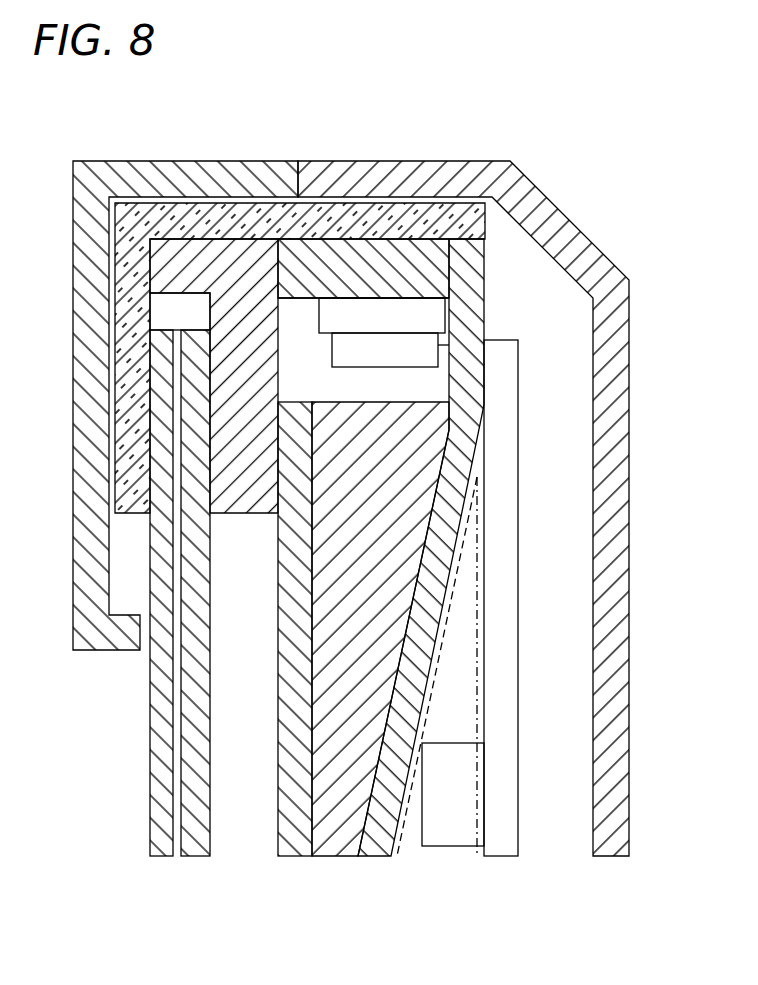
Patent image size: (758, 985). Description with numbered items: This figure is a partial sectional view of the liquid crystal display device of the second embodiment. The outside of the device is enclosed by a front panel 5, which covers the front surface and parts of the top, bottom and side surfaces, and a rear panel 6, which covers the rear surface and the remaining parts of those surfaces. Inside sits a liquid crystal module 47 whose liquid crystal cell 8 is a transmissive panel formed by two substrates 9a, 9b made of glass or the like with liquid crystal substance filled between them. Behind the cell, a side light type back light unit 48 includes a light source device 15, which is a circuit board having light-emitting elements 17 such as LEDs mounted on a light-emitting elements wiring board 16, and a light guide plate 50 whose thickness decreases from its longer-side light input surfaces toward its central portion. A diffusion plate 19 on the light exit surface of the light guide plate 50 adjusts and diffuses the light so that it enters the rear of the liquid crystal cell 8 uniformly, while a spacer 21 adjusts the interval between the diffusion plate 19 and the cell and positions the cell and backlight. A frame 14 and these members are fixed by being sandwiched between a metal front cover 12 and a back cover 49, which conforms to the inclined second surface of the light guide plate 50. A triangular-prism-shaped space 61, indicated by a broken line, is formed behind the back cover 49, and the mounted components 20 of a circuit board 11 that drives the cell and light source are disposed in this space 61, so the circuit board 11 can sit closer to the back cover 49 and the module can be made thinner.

The front panel 5 is at (73, 377).
The rear panel 6 is at (629, 440).
The liquid crystal cell 8 is at (178, 603).
The substrate 9a is at (147, 832).
The substrate 9b is at (207, 837).
The circuit board 11 is at (518, 590).
The front cover 12 is at (118, 262).
The frame 14 is at (380, 240).
The light source device 15 is at (382, 298).
The light-emitting elements wiring board 16 is at (447, 315).
The light-emitting element 17 is at (450, 346).
The diffusion plate 19 is at (278, 617).
The mounted components 20 is at (448, 743).
The spacer 21 is at (233, 513).
The liquid crystal module 47 is at (329, 607).
The side light type back light unit 48 is at (395, 576).
The back cover 49 is at (475, 462).
The light guide plate 50 is at (387, 402).
The space 61 is at (453, 698).